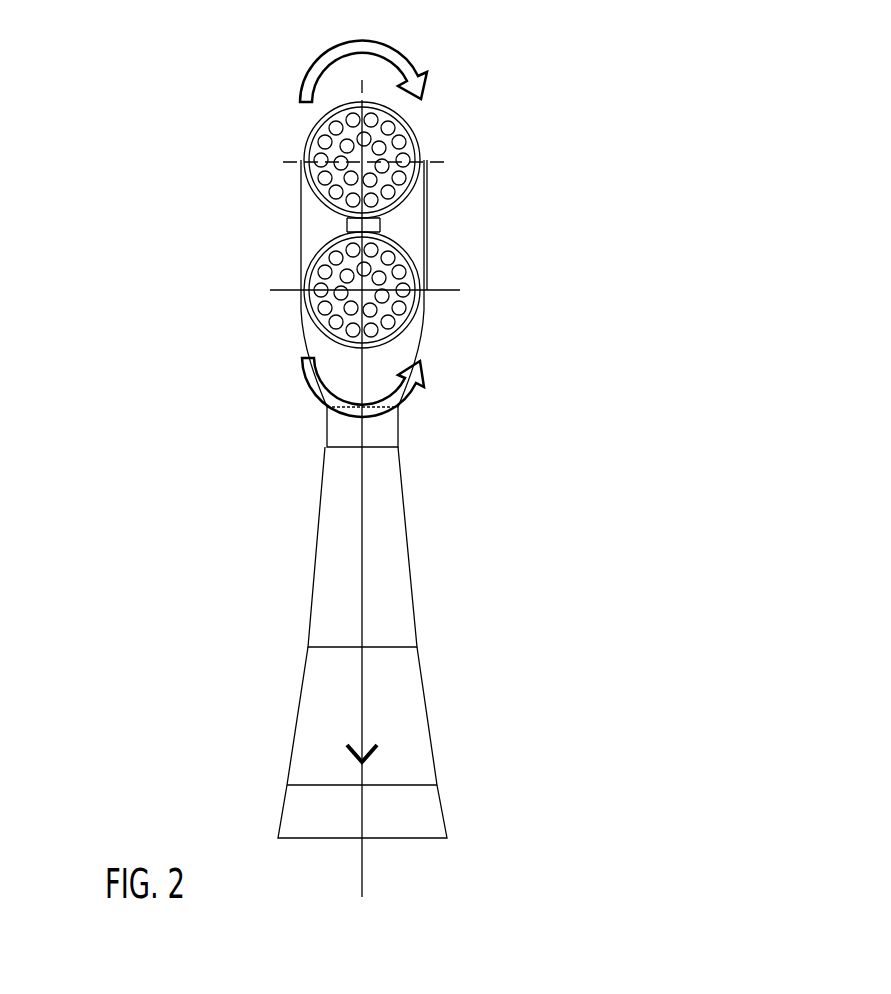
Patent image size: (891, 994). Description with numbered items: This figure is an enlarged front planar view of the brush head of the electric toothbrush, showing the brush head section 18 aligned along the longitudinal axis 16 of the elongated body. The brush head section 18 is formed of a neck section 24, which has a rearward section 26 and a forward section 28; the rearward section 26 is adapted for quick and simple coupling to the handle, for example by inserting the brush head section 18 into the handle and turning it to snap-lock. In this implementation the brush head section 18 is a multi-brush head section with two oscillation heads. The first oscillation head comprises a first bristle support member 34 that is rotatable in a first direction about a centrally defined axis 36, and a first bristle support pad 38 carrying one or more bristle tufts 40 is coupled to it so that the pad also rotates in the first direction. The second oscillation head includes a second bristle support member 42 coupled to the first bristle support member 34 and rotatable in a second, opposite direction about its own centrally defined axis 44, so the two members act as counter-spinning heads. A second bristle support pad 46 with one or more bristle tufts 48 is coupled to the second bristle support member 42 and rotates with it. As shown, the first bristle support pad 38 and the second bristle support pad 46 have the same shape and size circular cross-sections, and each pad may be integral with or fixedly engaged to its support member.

The longitudinal axis 16 is at (365, 870).
The brush head section 18 is at (703, 333).
The neck section 24 is at (405, 575).
The rearward section 26 is at (440, 800).
The forward section 28 is at (402, 465).
The first bristle support member 34 is at (443, 320).
The centrally defined axis 36 is at (408, 289).
The first bristle support pad 38 is at (320, 248).
The bristle tufts 40 is at (332, 338).
The second bristle support member 42 is at (460, 148).
The centrally defined axis 44 is at (415, 153).
The second bristle support pad 46 is at (315, 122).
The bristle tufts 48 is at (330, 205).